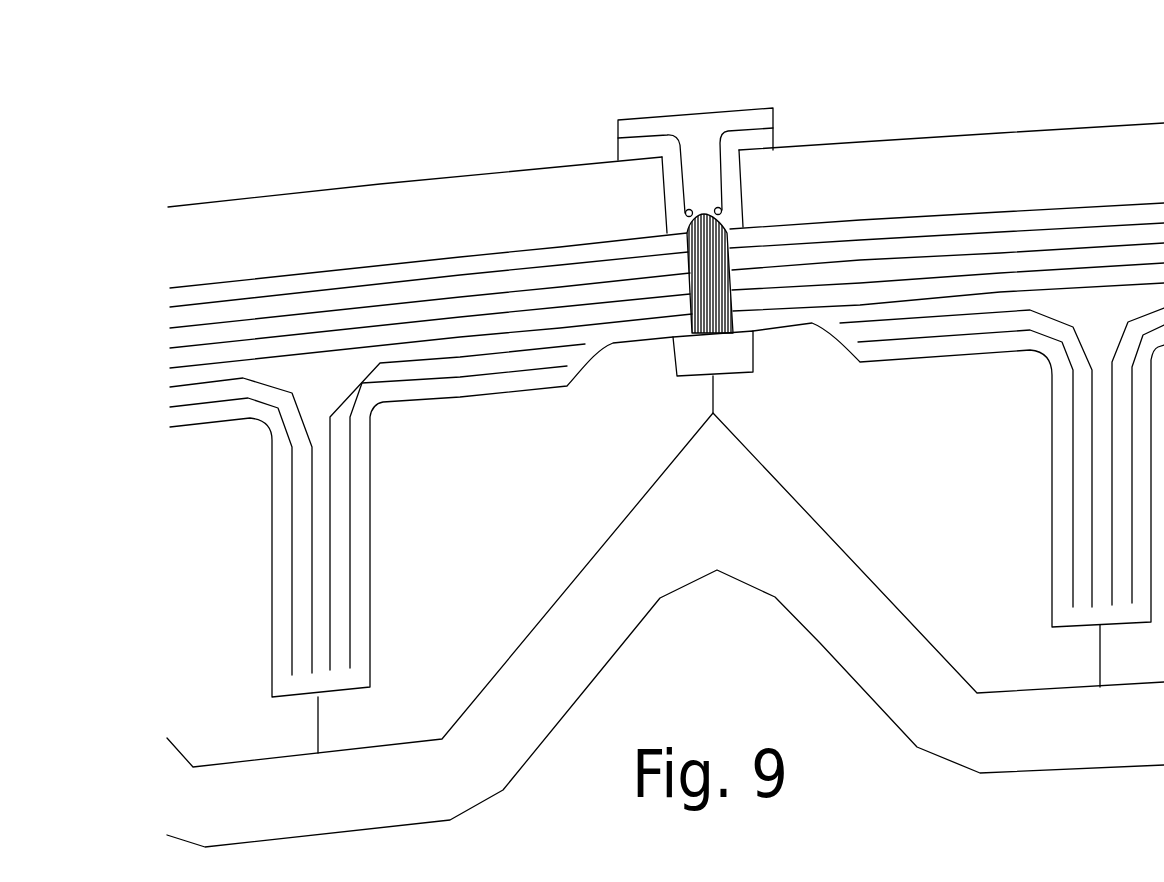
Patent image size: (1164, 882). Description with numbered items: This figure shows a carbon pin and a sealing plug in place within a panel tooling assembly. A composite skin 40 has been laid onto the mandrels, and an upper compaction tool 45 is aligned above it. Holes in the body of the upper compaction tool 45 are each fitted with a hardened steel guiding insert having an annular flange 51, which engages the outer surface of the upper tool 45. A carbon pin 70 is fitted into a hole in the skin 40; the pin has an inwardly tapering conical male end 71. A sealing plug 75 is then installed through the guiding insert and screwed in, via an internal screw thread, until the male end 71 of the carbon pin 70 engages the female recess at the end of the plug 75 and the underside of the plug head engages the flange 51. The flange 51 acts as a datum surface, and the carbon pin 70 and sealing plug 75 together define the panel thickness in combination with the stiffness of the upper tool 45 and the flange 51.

The composite skin 40 is at (918, 210).
The upper compaction tool 45 is at (381, 184).
The guiding insert with annular flange 51 is at (776, 136).
The carbon pin 70 is at (732, 278).
The conical male end 71 is at (687, 226).
The sealing plug 75 is at (691, 114).